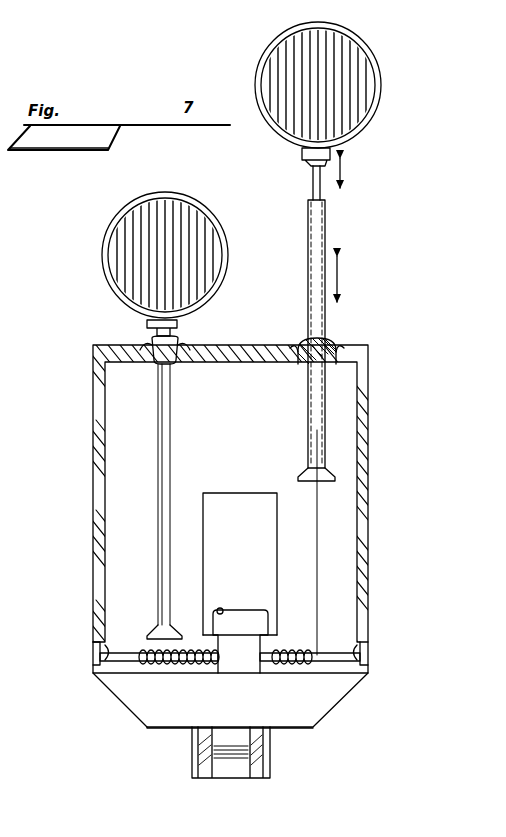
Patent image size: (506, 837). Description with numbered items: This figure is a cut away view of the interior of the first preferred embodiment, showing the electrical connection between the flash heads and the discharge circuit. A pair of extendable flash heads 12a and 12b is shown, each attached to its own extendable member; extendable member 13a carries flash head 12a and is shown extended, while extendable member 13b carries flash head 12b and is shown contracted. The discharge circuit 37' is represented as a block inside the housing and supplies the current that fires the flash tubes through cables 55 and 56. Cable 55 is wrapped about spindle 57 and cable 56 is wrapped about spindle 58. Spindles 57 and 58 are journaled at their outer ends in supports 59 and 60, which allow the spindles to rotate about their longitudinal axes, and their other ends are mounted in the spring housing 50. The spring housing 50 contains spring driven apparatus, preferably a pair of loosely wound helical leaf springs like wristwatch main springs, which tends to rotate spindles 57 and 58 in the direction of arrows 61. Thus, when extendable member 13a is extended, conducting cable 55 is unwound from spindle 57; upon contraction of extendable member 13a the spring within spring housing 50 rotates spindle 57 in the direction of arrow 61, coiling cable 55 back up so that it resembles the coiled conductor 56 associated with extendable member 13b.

The extendable flash head 12a is at (344, 28).
The extendable flash head 12b is at (194, 192).
The extendable member 13a is at (345, 229).
The extendable member 13b is at (168, 447).
The discharge circuit 37' is at (240, 540).
The spring housing 50 is at (240, 661).
The cable 55 is at (271, 629).
The cable 56 is at (217, 615).
The spindle 57 is at (325, 660).
The spindle 58 is at (137, 652).
The support 59 is at (371, 651).
The support 60 is at (96, 641).
The arrows 61 is at (106, 662).